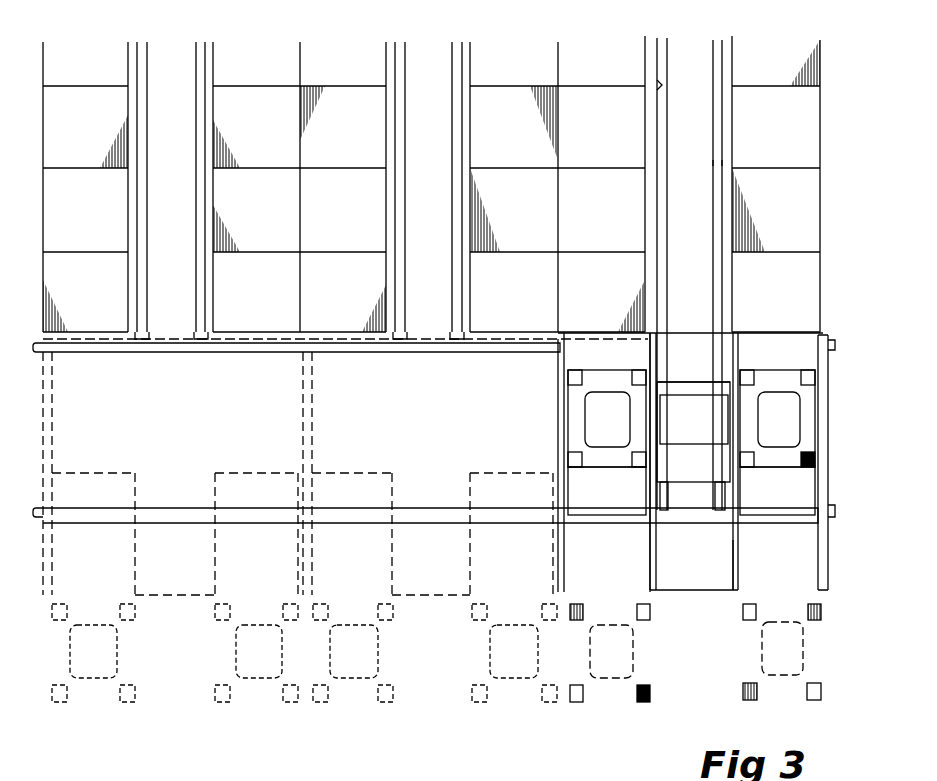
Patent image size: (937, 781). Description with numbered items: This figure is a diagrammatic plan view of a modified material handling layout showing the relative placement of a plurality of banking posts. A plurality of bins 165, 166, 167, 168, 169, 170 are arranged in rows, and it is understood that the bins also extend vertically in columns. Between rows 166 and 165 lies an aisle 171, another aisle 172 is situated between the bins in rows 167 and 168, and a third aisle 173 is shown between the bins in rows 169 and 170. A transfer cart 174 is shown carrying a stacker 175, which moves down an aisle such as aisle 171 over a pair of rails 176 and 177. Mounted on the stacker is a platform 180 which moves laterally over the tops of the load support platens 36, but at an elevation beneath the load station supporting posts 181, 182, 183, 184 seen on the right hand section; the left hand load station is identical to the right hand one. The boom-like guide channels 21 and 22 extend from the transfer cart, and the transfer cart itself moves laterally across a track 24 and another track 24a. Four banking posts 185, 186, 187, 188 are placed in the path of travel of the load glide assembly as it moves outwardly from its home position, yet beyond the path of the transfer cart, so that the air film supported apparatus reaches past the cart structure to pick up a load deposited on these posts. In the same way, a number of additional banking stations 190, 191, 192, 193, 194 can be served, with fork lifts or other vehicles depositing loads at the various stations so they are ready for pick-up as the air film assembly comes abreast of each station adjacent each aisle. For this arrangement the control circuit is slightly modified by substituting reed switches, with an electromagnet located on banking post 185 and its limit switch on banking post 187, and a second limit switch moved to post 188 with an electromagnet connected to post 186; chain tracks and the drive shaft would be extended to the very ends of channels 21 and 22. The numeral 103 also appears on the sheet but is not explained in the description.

The bin row 170 is at (93, 68).
The bin row 169 is at (250, 66).
The bin row 168 is at (342, 66).
The bin row 167 is at (507, 66).
The bin row 166 is at (597, 66).
The bin row 165 is at (770, 66).
The aisle 173 is at (168, 54).
The aisle 172 is at (430, 54).
The aisle 171 is at (688, 54).
The rail 176 is at (661, 98).
The rail 177 is at (715, 137).
The track 24a is at (428, 352).
The track 24 is at (788, 522).
The transfer cart 174 is at (562, 350).
The stacker 175 is at (709, 384).
The platform 180 is at (708, 440).
The load station supporting post 181 is at (748, 372).
The load station supporting post 182 is at (810, 373).
The load station supporting post 183 is at (746, 468).
The load station supporting post 184 is at (811, 467).
The guide channel 21 is at (742, 563).
The guide channel 22 is at (818, 563).
The load support platen 36 is at (760, 645).
The banking post 185 is at (743, 612).
The banking post 186 is at (810, 605).
The banking post 187 is at (752, 700).
The banking post 188 is at (815, 700).
The banking station 190 is at (615, 686).
The banking station 191 is at (515, 686).
The banking station 192 is at (360, 686).
The banking station 193 is at (265, 686).
The banking station 194 is at (103, 686).
The base 103 is at (215, 774).